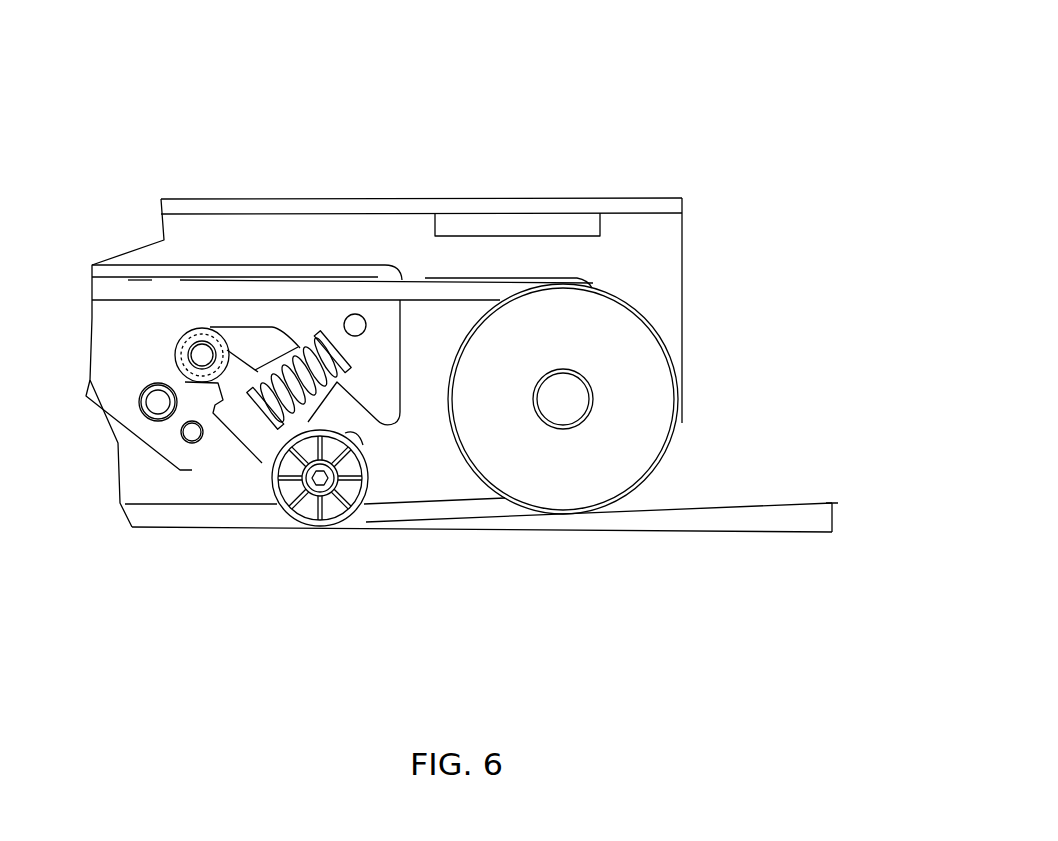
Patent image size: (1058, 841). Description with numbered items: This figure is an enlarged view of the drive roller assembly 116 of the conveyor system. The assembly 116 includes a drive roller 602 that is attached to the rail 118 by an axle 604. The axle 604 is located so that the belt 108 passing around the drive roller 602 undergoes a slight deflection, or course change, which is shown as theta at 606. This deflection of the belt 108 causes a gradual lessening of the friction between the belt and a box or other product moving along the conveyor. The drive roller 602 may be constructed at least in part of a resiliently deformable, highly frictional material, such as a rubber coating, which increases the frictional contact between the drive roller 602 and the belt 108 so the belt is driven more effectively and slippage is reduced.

The drive roller assembly 116 is at (105, 158).
The rail 118 is at (288, 197).
The belt 108 is at (432, 275).
The drive roller 602 is at (582, 315).
The axle 604 is at (565, 399).
The theta (belt deflection angle) 606 is at (842, 520).